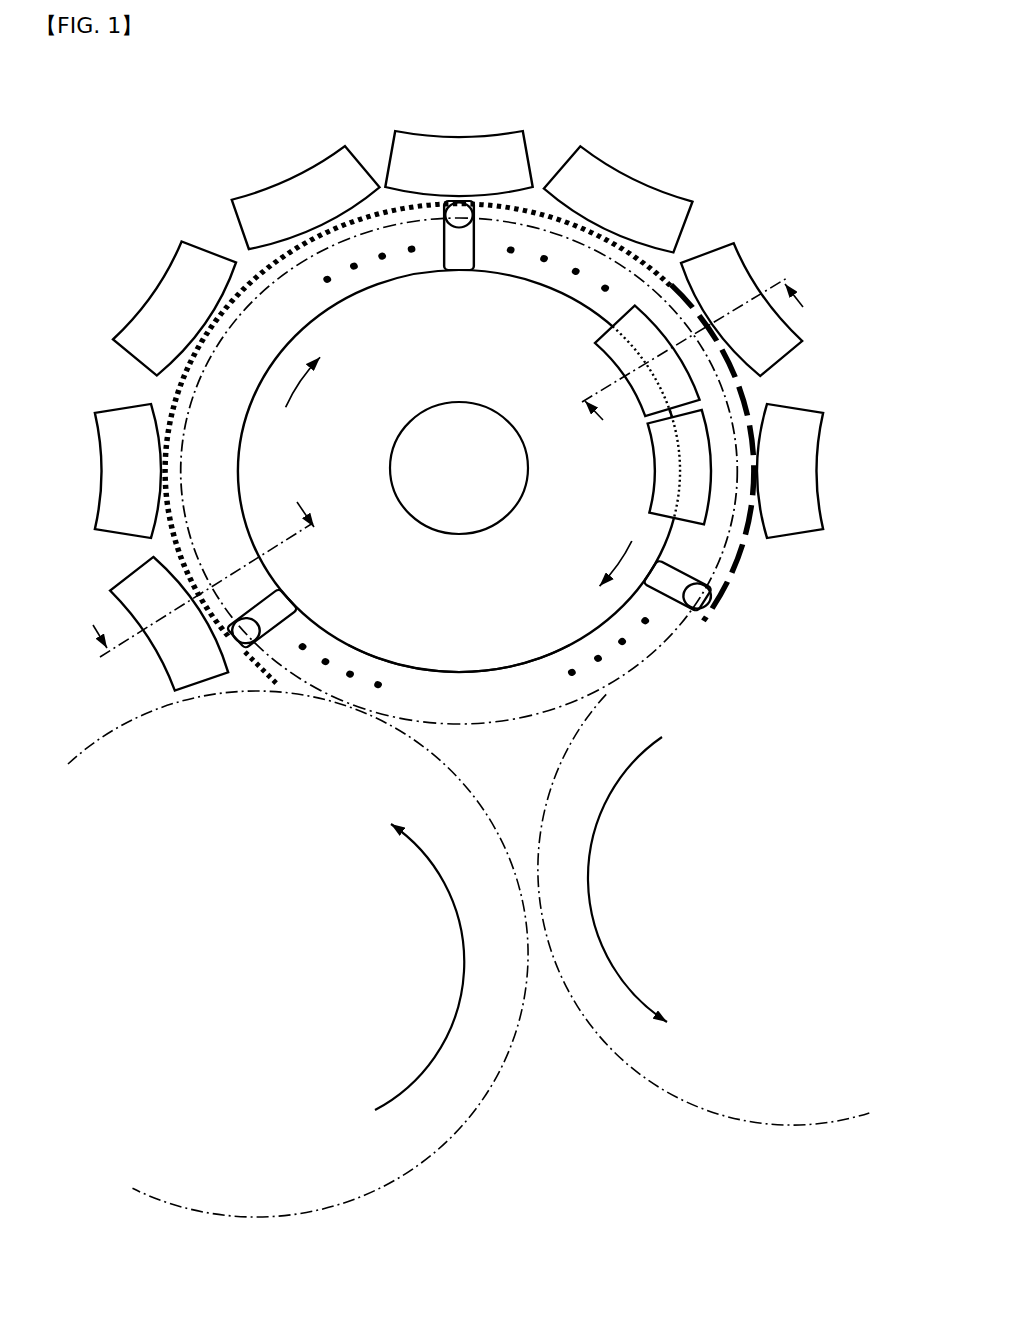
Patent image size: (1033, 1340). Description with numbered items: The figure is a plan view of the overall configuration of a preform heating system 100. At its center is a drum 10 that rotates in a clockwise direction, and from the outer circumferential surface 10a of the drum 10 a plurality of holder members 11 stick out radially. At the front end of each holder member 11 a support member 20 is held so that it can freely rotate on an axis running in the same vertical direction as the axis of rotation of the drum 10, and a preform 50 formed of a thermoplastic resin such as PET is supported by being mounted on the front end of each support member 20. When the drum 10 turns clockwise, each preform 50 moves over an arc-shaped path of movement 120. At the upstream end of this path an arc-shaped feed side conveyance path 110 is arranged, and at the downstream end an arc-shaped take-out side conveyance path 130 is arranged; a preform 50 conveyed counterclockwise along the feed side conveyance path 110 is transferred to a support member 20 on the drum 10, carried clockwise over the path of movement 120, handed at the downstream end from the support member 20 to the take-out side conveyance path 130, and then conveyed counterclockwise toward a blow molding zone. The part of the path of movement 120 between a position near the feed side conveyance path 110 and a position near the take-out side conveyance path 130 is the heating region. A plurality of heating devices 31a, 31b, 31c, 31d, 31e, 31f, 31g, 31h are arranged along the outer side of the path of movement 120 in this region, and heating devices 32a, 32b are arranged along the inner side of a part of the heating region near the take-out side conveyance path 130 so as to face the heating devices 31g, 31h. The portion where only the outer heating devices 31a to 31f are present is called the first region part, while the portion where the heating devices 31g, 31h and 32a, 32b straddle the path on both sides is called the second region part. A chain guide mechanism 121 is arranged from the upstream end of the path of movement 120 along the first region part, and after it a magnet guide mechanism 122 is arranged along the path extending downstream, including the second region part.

The preform heating system 100 is at (197, 164).
The drum 10 is at (468, 640).
The outer circumferential surface 10a is at (524, 667).
The holder member 11 is at (490, 230).
The support member 20 is at (483, 421).
The preform 50 is at (445, 213).
The heating device 31a is at (160, 668).
The heating device 31b is at (112, 410).
The heating device 31c is at (166, 300).
The heating device 31d is at (286, 182).
The heating device 31e is at (459, 148).
The heating device 31f is at (625, 180).
The heating device 31g is at (737, 256).
The heating device 31h is at (807, 528).
The heating device 32a is at (600, 348).
The heating device 32b is at (655, 481).
The feed side conveyance path 110 is at (380, 1195).
The path of movement 120 is at (196, 504).
The chain guide mechanism 121 is at (266, 690).
The magnet guide mechanism 122 is at (742, 581).
The take-out side conveyance path 130 is at (677, 1093).